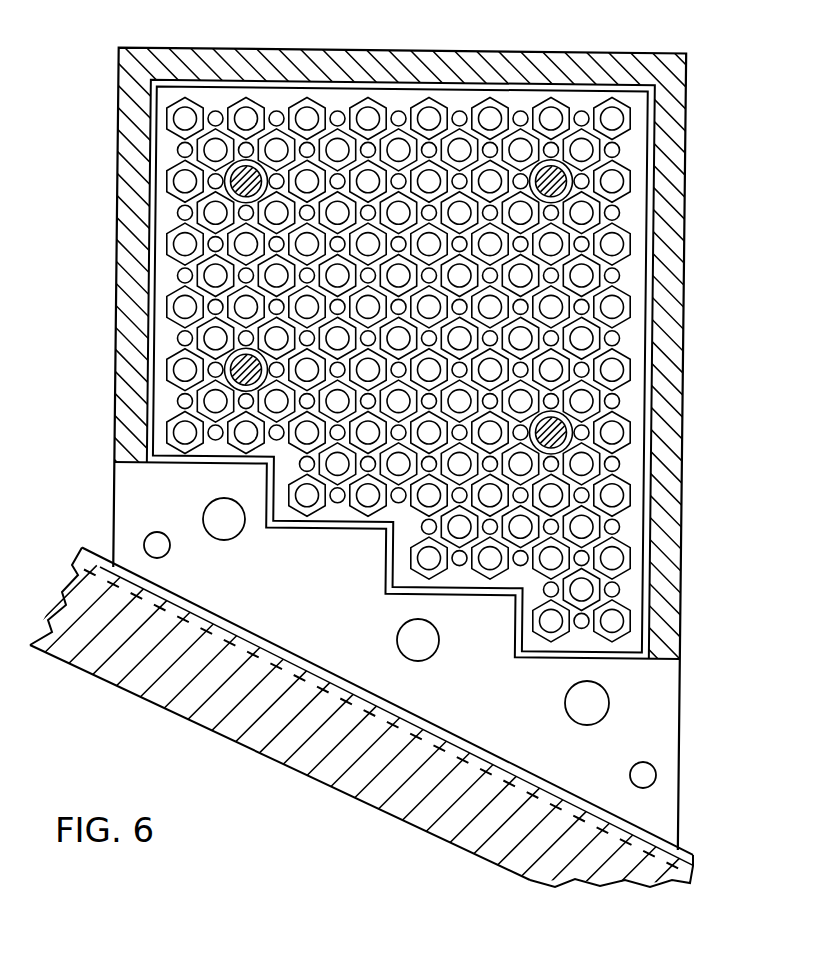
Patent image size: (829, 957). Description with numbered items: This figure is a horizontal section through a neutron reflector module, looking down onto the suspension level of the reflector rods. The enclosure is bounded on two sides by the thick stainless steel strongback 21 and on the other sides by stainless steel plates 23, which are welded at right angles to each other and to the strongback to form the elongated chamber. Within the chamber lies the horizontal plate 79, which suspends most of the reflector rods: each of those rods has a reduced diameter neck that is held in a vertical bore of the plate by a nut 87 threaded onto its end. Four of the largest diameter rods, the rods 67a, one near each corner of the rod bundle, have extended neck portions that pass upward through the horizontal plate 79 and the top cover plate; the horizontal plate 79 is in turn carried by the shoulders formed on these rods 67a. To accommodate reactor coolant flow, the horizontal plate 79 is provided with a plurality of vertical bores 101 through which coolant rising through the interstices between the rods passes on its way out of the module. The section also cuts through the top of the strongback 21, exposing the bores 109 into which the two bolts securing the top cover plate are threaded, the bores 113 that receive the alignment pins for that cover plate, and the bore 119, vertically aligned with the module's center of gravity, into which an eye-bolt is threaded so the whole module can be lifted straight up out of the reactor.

The strongback 21 is at (652, 742).
The stainless steel plates 23 is at (397, 60).
The horizontal plate 79 is at (462, 110).
The largest diameter rods with extended neck portions 67a is at (556, 178).
The nut 87 is at (618, 187).
The vertical bores 101 is at (618, 153).
The bores 109 is at (210, 520).
The bores 113 is at (150, 547).
The bore 119 is at (410, 640).